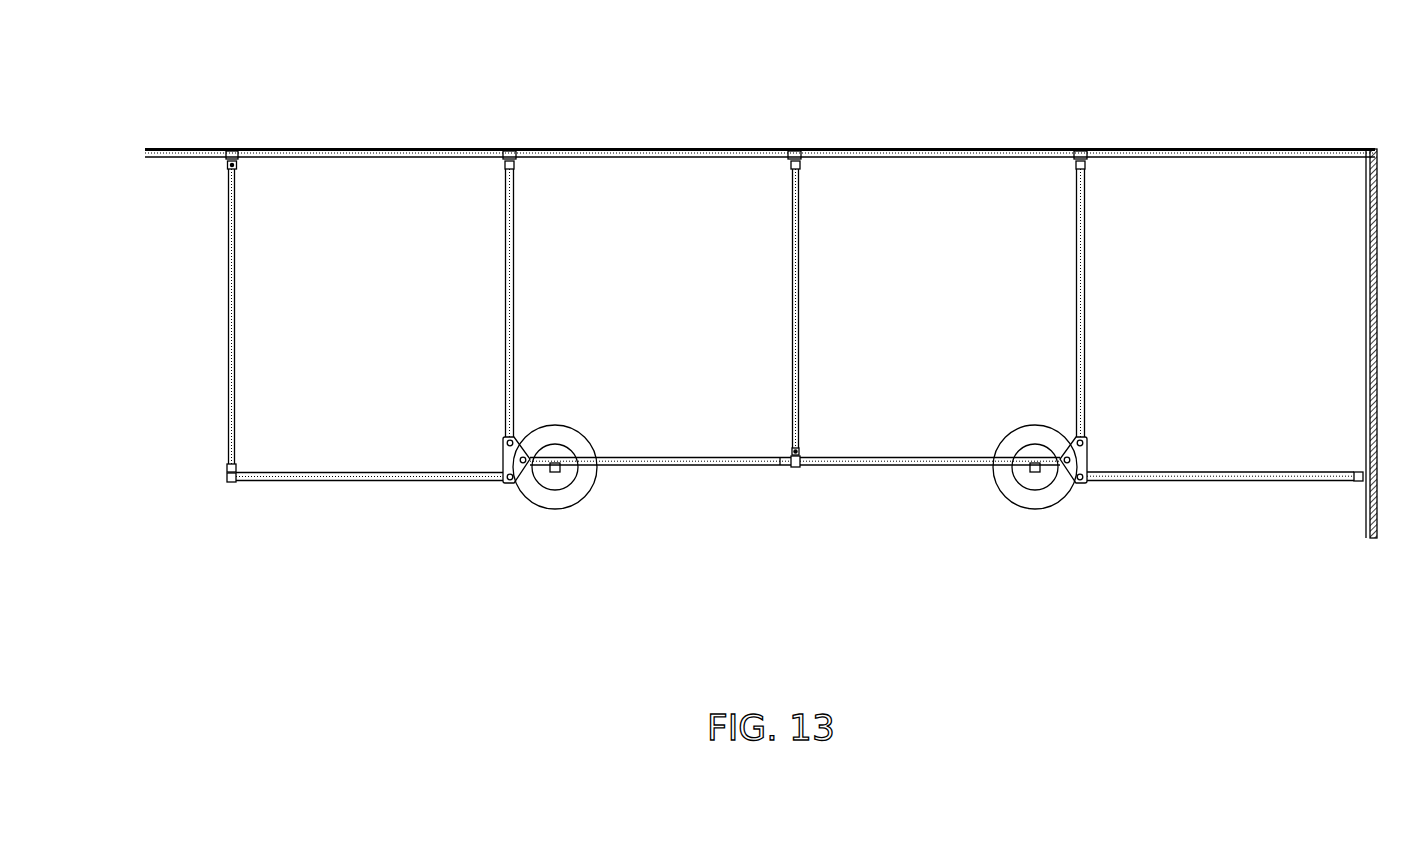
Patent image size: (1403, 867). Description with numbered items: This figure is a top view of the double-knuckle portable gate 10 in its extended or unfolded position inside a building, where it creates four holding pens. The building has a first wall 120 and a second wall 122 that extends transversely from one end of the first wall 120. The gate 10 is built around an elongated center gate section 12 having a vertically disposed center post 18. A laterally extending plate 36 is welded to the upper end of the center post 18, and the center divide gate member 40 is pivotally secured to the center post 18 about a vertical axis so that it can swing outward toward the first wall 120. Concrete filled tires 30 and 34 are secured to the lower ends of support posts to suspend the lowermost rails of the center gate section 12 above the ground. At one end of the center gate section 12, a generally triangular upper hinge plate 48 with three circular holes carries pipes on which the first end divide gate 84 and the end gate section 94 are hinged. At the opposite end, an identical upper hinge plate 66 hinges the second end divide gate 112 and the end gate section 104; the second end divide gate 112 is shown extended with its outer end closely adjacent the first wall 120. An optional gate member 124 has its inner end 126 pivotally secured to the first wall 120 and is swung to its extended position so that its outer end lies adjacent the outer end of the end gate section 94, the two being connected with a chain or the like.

The double-knuckle portable gate 10 is at (761, 310).
The center gate section 12 is at (778, 468).
The center post 18 is at (797, 468).
The concrete filled tire 30 is at (588, 490).
The concrete filled tire 34 is at (1061, 500).
The laterally extending plate 36 is at (798, 448).
The center divide gate member 40 is at (790, 372).
The upper hinge plate 48 is at (502, 457).
The upper hinge plate 66 is at (1093, 459).
The first end divide gate 84 is at (514, 344).
The end gate section 94 is at (376, 481).
The end gate section 104 is at (1297, 480).
The second end divide gate 112 is at (1087, 347).
The first wall 120 is at (965, 156).
The second wall 122 is at (1365, 308).
The optional gate member 124 is at (287, 316).
The inner end 126 is at (233, 169).